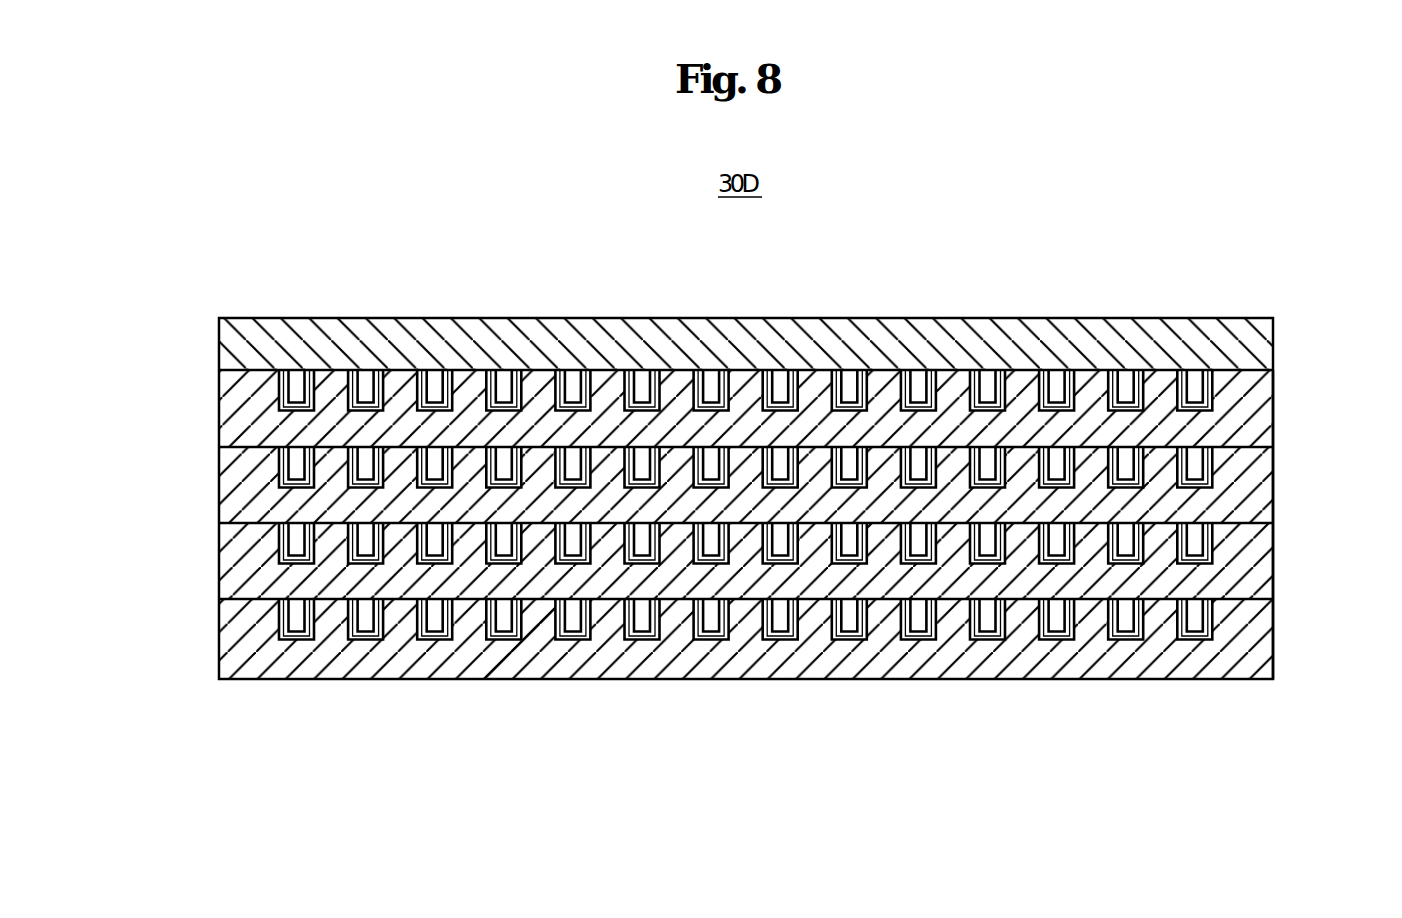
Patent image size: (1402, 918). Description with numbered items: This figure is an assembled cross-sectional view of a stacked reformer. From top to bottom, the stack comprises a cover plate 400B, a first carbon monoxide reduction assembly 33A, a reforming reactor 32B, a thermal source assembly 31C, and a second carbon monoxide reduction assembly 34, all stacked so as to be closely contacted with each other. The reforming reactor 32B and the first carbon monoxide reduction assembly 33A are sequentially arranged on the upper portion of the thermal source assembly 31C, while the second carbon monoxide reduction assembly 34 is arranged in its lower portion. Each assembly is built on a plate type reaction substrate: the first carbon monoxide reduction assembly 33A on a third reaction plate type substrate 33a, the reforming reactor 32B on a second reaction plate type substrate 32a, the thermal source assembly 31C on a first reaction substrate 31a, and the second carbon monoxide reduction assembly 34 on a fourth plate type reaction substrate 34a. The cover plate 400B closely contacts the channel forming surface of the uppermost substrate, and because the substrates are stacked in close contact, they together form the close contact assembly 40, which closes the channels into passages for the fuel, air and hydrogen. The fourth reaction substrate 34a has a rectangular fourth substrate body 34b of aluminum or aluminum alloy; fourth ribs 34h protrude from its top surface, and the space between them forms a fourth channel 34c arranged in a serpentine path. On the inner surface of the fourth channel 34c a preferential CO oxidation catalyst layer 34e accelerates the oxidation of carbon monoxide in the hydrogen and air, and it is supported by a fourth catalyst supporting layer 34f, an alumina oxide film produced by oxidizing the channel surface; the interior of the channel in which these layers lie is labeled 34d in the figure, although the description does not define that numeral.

The close contact assembly 40 is at (731, 541).
The cover plate 400B is at (219, 337).
The third reaction plate type substrate 33a is at (214, 410).
The second reaction plate type substrate 32a is at (214, 479).
The first reaction substrate 31a is at (214, 563).
The fourth plate type reaction substrate 34a is at (723, 682).
The first carbon monoxide reduction assembly 33A is at (1292, 389).
The reforming reactor 32B is at (1292, 478).
The thermal source assembly 31C is at (1292, 553).
The second carbon monoxide reduction assembly 34 is at (753, 682).
The fourth substrate body 34b is at (1333, 622).
The fourth channel 34c is at (505, 641).
The channel liner 34d is at (848, 630).
The preferential CO oxidation catalyst layer 34e is at (918, 630).
The fourth catalyst supporting layer 34f is at (1195, 641).
The fourth ribs 34h is at (542, 615).